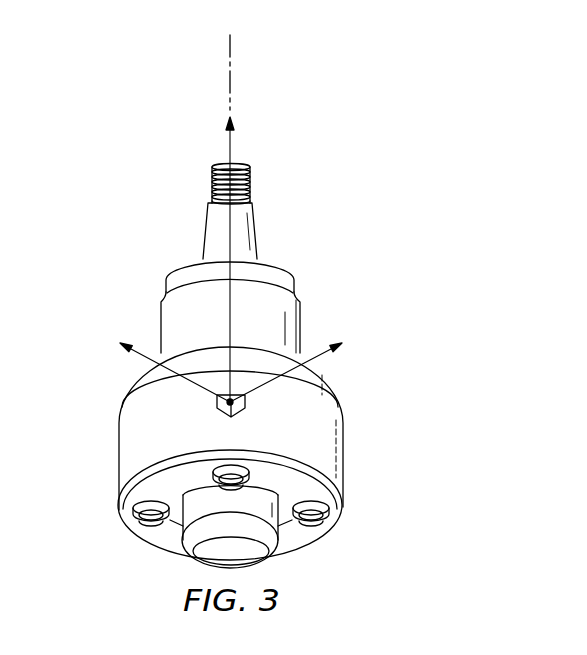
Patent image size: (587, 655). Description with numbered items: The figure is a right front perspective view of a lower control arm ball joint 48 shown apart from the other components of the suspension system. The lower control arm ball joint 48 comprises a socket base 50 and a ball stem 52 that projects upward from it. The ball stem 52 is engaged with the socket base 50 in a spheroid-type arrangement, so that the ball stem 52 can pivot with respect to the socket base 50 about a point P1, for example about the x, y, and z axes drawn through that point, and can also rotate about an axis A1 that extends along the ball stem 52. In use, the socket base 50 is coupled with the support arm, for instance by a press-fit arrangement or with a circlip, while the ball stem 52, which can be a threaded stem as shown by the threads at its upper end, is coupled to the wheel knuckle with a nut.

The lower control arm ball joint 48 is at (115, 185).
The socket base 50 is at (128, 439).
The ball stem 52 is at (250, 182).
The axis A1 is at (233, 59).
The point P1 is at (230, 402).